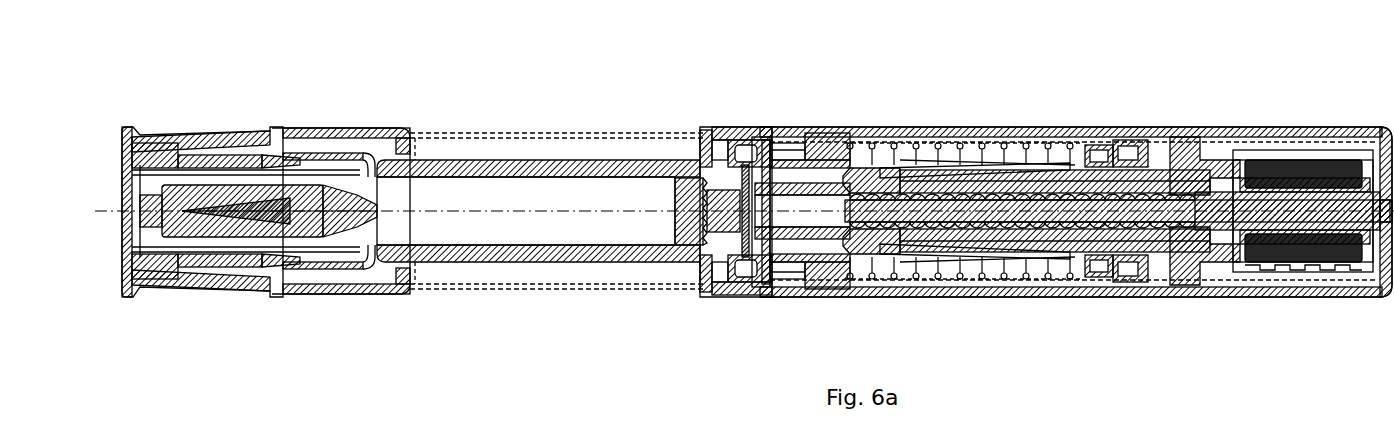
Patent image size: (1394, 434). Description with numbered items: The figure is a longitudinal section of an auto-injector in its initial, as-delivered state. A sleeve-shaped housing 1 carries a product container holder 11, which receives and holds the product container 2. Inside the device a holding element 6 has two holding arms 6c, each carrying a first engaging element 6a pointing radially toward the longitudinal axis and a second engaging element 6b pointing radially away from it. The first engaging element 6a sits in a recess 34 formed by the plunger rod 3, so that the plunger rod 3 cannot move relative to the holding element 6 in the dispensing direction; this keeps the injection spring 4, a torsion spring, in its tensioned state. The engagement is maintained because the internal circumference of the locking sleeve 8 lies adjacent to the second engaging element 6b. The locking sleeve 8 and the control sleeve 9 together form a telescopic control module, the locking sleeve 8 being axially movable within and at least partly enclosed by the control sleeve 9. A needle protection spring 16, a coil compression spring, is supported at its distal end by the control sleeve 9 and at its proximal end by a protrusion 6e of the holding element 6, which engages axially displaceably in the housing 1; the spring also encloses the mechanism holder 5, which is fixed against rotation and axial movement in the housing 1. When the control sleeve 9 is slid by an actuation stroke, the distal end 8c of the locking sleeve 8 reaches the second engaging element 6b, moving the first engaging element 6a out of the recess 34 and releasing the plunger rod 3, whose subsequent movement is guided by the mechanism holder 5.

The housing 1 is at (1295, 292).
The product container 2 is at (485, 178).
The plunger rod 3 is at (1155, 185).
The injection spring 4 is at (1347, 263).
The mechanism holder 5 is at (1186, 150).
The holding element 6 is at (1095, 150).
The first engaging element 6a is at (873, 175).
The second engaging element 6b is at (890, 168).
The holding arm 6c is at (1053, 155).
The protrusion 6e is at (1133, 147).
The locking sleeve 8 is at (819, 160).
The distal end of the locking sleeve 8c is at (813, 257).
The control sleeve 9 is at (839, 140).
The product container holder 11 is at (447, 163).
The needle protection spring 16 is at (990, 255).
The recess 34 is at (857, 237).